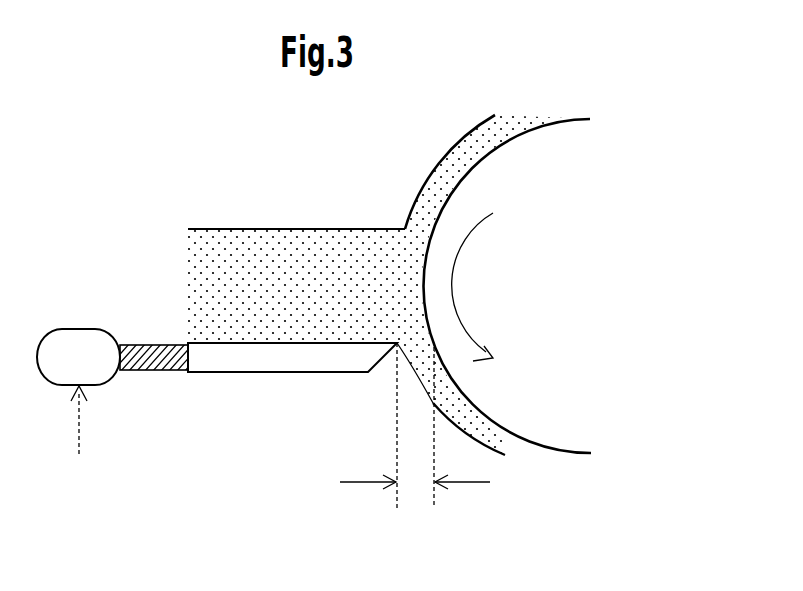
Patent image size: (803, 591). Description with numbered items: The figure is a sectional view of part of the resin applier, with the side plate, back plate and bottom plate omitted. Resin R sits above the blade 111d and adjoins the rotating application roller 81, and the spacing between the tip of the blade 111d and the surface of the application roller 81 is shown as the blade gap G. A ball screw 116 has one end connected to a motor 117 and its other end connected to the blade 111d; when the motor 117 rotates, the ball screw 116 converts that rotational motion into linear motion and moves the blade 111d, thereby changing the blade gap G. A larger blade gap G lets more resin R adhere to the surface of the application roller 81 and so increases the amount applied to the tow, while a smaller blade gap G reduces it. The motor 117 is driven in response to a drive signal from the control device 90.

The application roller 81 is at (604, 300).
The resin R is at (290, 242).
The blade gap G is at (415, 441).
The blade 111d is at (277, 372).
The ball screw 116 is at (142, 370).
The motor 117 is at (80, 328).
The control device 90 is at (80, 437).